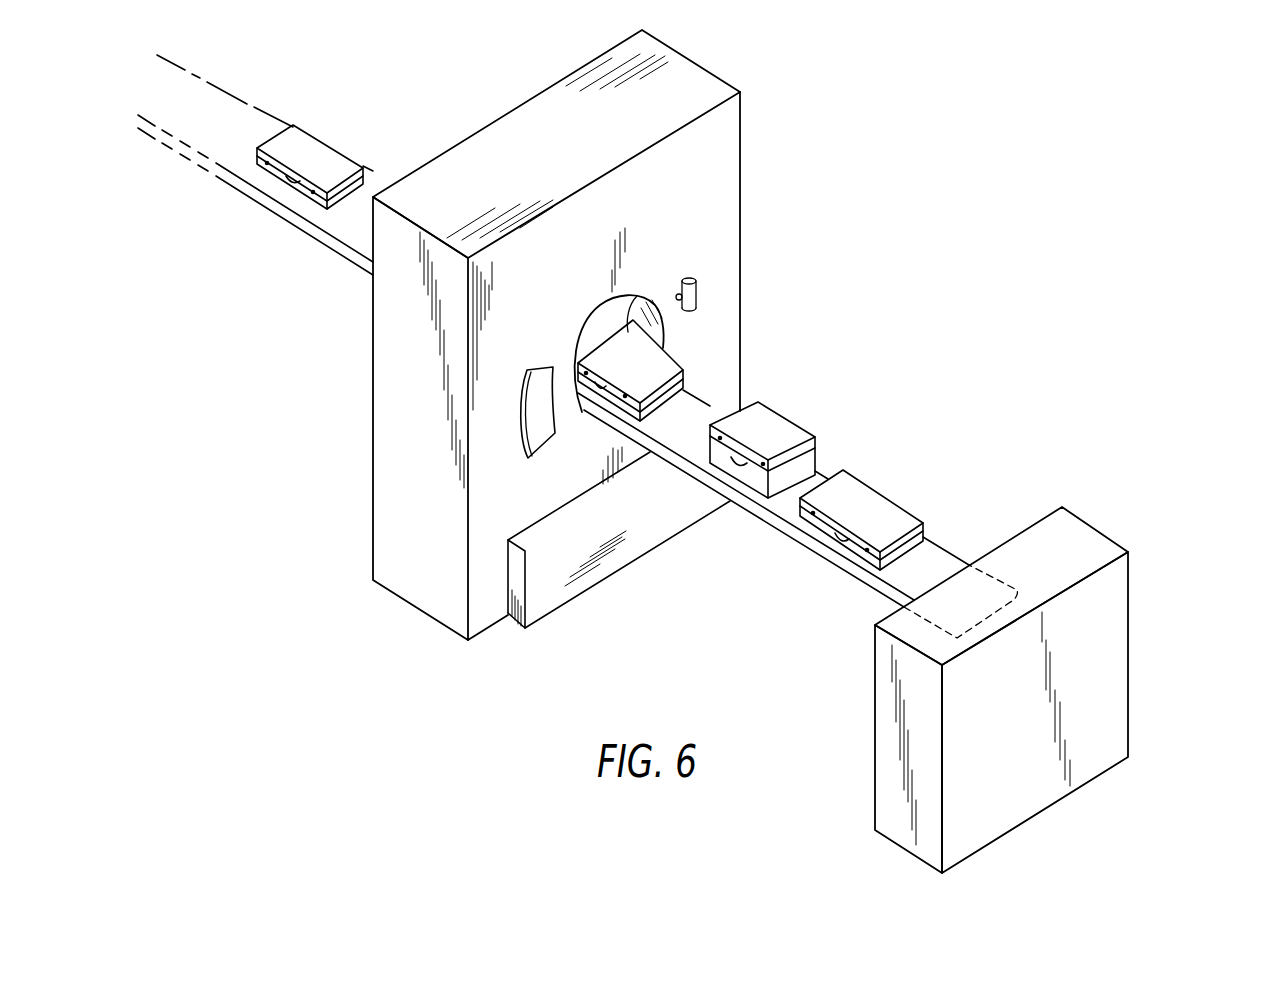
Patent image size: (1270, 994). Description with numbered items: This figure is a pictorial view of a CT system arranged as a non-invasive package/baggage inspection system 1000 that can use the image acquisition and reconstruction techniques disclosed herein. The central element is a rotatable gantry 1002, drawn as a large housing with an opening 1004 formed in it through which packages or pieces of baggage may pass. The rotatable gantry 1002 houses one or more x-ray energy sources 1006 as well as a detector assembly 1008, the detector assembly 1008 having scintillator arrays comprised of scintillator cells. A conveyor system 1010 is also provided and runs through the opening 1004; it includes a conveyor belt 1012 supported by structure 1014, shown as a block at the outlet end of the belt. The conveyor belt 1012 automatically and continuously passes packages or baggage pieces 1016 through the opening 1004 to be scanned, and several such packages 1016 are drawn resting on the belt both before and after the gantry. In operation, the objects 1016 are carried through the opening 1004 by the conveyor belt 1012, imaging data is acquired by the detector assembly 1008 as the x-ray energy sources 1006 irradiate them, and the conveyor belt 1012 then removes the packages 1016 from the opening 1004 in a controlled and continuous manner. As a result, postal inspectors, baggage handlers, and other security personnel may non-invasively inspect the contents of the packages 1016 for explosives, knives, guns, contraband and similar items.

The package/baggage inspection system 1000 is at (884, 356).
The rotatable gantry 1002 is at (698, 211).
The opening 1004 is at (645, 293).
The x-ray energy source 1006 is at (697, 299).
The detector assembly 1008 is at (546, 382).
The conveyor system 1010 is at (153, 162).
The conveyor belt 1012 is at (347, 228).
The structure 1014 is at (1115, 643).
The packages or baggage pieces 1016 is at (320, 152).